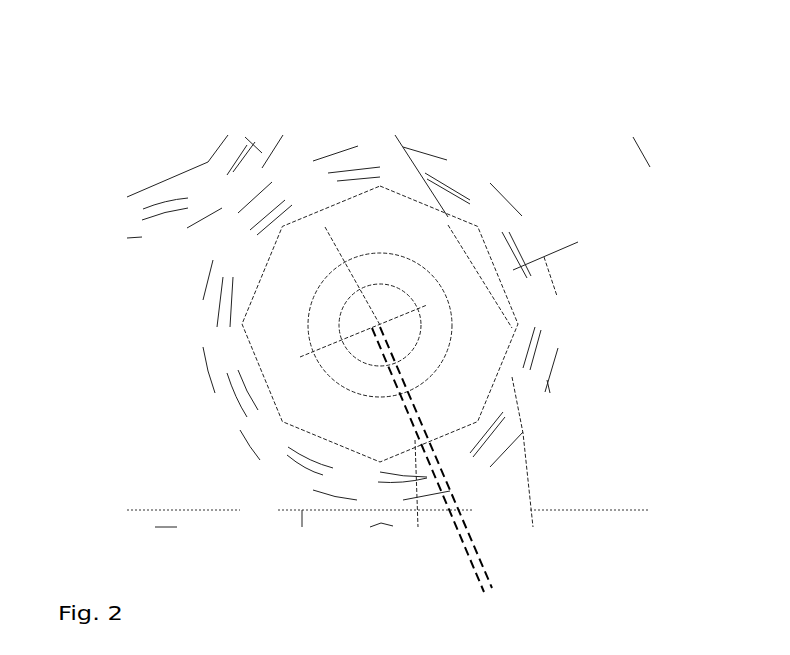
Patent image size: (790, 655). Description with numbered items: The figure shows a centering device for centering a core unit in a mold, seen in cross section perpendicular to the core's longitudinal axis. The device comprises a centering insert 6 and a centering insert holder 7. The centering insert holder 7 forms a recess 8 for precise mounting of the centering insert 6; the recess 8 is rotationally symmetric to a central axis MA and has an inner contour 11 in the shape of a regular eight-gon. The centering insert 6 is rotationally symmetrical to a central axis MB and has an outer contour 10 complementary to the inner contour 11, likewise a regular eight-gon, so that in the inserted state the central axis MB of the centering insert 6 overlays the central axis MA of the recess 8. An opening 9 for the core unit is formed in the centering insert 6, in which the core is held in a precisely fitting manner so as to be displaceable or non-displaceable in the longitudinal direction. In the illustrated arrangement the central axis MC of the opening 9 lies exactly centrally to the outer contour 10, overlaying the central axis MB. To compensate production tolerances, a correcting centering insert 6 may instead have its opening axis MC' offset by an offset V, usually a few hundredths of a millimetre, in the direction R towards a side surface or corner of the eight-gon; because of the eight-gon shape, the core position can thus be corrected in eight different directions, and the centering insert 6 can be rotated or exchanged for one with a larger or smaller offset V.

The centering insert 6 is at (370, 225).
The centering insert holder 7 is at (493, 210).
The recess 8 is at (492, 313).
The opening 9 is at (365, 350).
The outer contour 10 is at (262, 277).
The inner contour 11 is at (438, 213).
The central axis of the recess MA is at (380, 325).
The central axis of the centering insert MB is at (447, 188).
The central axis of the opening MC is at (506, 199).
The central axis of the opening MC' is at (207, 283).
The offset direction R is at (213, 393).
The offset V is at (587, 538).